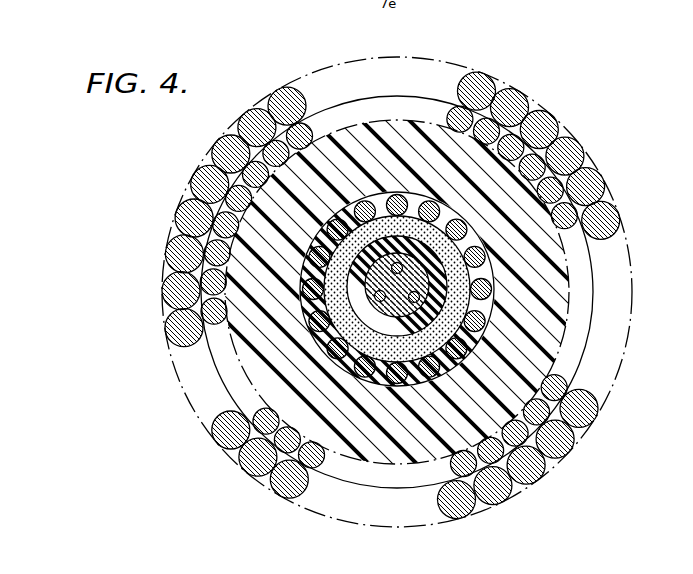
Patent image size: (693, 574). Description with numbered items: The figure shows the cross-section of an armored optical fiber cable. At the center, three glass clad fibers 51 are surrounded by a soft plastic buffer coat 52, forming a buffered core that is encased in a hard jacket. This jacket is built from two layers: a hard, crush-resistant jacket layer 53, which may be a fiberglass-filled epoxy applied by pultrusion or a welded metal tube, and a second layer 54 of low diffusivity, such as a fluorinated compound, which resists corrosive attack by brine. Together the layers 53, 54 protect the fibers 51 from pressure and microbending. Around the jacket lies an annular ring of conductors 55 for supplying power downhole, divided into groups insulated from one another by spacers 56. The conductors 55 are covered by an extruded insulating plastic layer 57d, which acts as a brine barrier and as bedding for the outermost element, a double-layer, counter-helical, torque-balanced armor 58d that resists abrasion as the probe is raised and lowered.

The glass clad fibers 51 is at (414, 291).
The buffer coat 52 is at (384, 314).
The jacket layer 53 is at (470, 247).
The second jacket layer 54 is at (478, 262).
The conductors 55 is at (380, 193).
The spacers 56 is at (322, 226).
The insulating plastic layer 57d is at (558, 313).
The outer armor 58d is at (308, 122).